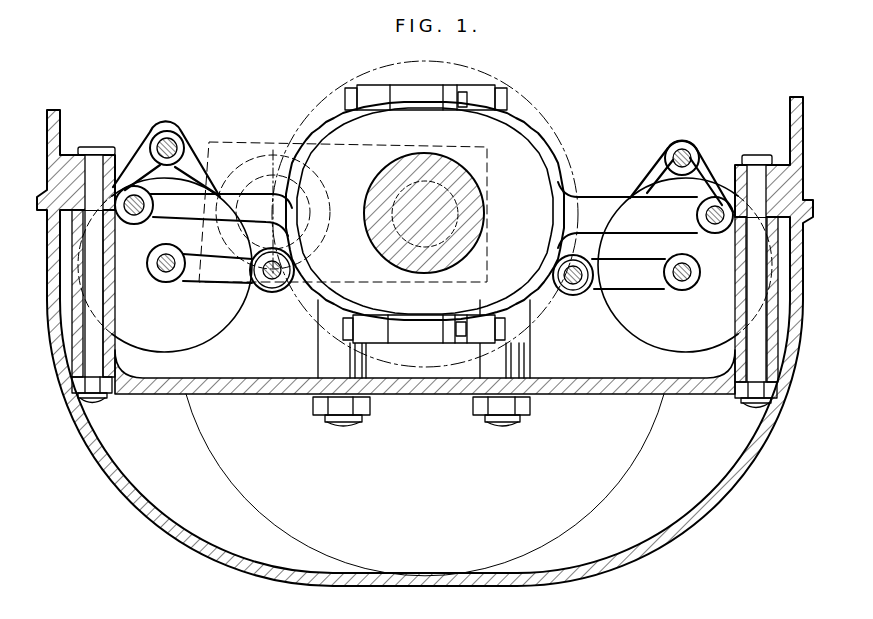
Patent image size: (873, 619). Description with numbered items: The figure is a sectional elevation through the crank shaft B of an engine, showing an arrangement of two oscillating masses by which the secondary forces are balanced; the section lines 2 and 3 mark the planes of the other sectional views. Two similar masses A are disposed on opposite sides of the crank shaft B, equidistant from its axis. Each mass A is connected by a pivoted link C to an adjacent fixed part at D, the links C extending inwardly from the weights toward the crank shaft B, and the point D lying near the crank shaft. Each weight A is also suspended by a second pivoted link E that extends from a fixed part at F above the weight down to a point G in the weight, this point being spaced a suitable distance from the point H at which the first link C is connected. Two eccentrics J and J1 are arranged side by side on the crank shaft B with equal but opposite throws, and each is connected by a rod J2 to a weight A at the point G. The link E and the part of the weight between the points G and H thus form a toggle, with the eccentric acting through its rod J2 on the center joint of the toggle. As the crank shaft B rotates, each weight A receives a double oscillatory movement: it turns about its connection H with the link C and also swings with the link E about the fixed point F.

The section line 2- 2 is at (812, 217).
The section line 3- 3 is at (166, 455).
The oscillating mass A is at (697, 418).
The crank shaft B is at (462, 187).
The pivoted link C is at (643, 277).
The fixed part D is at (575, 296).
The second pivoted link E is at (704, 196).
The fixed part F is at (678, 152).
The point G is at (718, 206).
The point H is at (682, 282).
The eccentric J is at (545, 160).
The eccentric J1 is at (320, 157).
The rod J2 is at (599, 203).